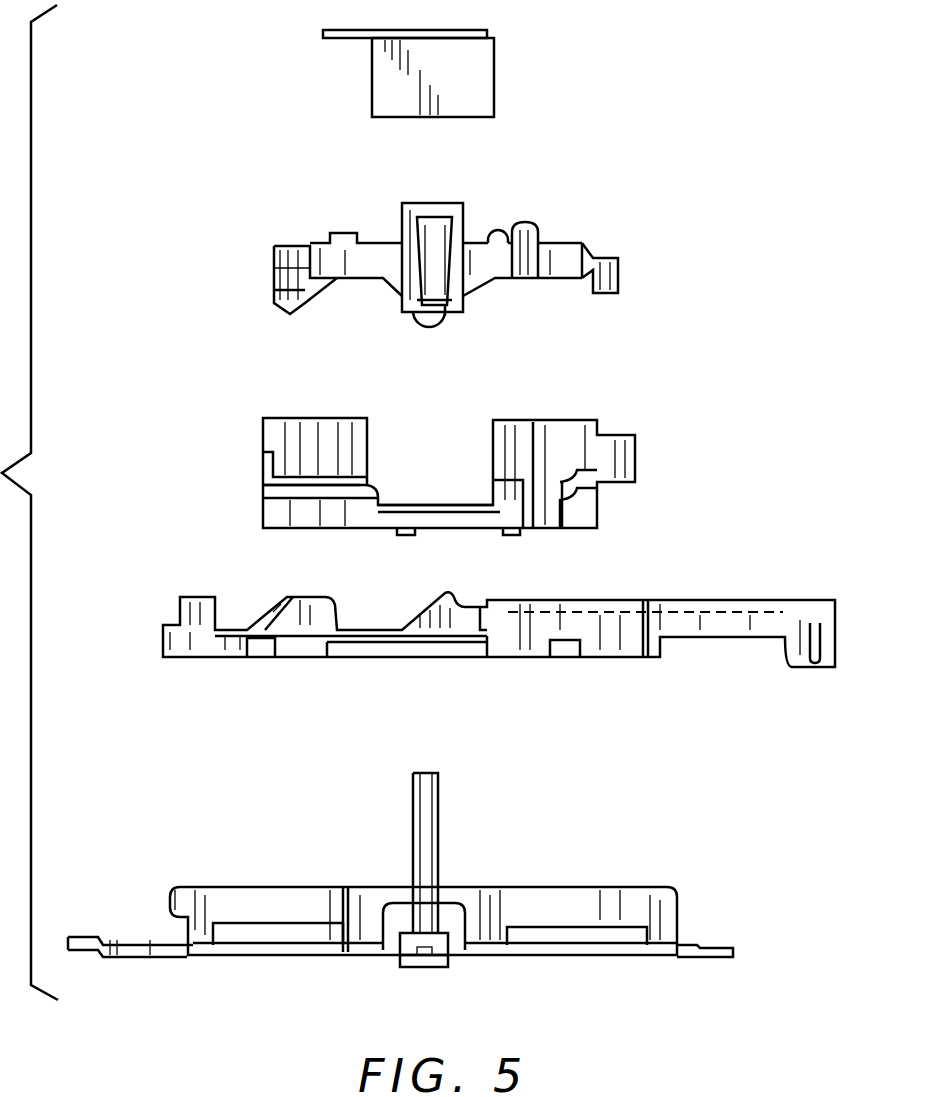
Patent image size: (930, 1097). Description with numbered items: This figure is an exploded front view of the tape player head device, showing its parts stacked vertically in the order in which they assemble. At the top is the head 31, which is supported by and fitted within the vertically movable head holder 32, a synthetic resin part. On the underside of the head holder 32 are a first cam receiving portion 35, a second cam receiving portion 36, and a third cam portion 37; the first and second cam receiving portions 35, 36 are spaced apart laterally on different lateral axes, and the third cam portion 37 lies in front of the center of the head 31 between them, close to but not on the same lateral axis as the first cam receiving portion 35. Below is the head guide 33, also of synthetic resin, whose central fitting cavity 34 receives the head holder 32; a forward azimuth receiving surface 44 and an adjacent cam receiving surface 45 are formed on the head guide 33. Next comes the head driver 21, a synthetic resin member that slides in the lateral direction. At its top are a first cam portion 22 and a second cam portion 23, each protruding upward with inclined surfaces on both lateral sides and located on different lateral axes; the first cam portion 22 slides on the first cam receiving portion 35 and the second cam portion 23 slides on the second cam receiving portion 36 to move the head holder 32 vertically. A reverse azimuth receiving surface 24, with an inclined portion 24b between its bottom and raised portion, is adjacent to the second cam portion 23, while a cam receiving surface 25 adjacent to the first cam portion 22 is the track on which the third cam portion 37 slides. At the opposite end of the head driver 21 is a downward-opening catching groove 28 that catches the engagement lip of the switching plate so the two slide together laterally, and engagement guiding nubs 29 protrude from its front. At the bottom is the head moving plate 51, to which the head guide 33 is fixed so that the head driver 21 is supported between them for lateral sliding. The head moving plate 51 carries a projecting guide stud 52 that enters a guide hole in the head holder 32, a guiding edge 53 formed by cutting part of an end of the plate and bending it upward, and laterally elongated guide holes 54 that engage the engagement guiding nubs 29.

The head driver 21 is at (460, 638).
The first cam portion 22 is at (443, 593).
The second cam portion 23 is at (287, 597).
The reverse azimuth receiving surface 24 is at (317, 597).
The inclined portion 24b is at (273, 618).
The cam receiving surface 25 is at (482, 605).
The catching groove 28 is at (815, 663).
The engagement guiding nubs 29 is at (262, 645).
The head 31 is at (487, 83).
The head holder 32 is at (568, 243).
The head guide 33 is at (575, 422).
The fitting cavity 34 is at (458, 435).
The first cam receiving portion 35 is at (445, 317).
The second cam receiving portion 36 is at (293, 313).
The third cam portion 37 is at (430, 327).
The forward azimuth receiving surface 44 is at (360, 470).
The cam receiving surface 45 is at (430, 507).
The head moving plate 51 is at (482, 953).
The guide stud 52 is at (440, 832).
The guiding edge 53 is at (590, 902).
The guide holes 54 is at (273, 927).